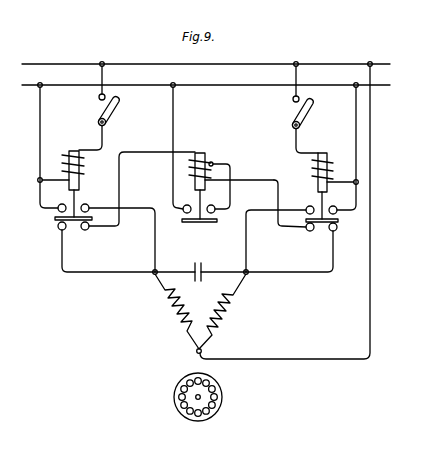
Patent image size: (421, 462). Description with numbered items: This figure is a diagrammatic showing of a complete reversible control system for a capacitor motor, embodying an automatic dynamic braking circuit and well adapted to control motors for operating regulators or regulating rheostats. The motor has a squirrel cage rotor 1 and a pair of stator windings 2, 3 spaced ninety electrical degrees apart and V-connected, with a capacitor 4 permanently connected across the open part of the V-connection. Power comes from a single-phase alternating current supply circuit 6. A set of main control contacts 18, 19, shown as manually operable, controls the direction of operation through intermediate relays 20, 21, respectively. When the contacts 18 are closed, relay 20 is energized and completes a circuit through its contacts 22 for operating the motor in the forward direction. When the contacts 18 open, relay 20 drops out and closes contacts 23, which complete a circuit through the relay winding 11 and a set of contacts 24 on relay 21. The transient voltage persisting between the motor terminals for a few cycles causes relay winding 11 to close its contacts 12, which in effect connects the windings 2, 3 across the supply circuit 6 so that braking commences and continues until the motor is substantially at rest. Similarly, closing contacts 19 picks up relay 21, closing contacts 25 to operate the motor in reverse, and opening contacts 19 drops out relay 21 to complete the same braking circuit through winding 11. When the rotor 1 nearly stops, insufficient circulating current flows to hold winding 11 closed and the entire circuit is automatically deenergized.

The rotor 1 is at (222, 396).
The stator winding 2 is at (171, 328).
The stator winding 3 is at (226, 321).
The capacitor 4 is at (198, 283).
The single-phase alternating current supply circuit 6 is at (381, 86).
The relay winding 11 is at (212, 161).
The relay contacts 12 is at (186, 206).
The main control contacts 18 is at (112, 112).
The main control contacts 19 is at (292, 118).
The intermediate relay 20 is at (74, 149).
The intermediate relay 21 is at (322, 151).
The contacts 22 is at (81, 205).
The contacts 23 is at (66, 230).
The contacts 24 is at (330, 231).
The contacts 25 is at (313, 207).